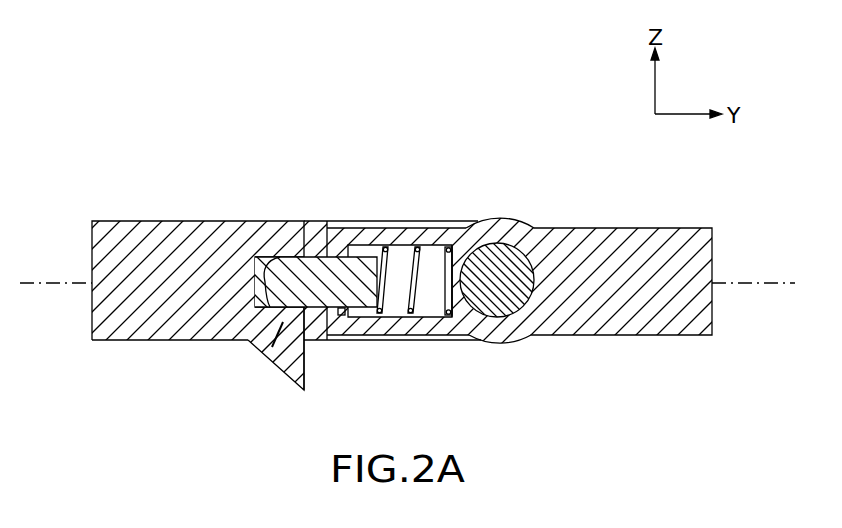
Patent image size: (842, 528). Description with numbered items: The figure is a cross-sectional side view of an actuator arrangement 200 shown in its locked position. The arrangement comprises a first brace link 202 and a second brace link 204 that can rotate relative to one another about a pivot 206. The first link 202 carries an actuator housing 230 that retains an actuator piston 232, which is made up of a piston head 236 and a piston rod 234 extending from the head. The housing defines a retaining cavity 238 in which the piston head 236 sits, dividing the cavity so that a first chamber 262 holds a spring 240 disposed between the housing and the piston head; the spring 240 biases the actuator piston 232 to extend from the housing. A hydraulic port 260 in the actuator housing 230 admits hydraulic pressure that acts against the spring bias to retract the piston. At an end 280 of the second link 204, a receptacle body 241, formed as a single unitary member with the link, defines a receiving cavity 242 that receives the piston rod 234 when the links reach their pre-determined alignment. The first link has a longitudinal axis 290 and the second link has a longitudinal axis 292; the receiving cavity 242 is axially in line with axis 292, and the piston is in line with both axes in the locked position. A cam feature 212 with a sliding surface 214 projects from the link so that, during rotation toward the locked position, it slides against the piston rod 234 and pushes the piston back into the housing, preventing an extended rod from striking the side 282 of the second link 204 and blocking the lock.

The actuator arrangement 200 is at (497, 130).
The first brace link 202 is at (662, 243).
The second brace link 204 is at (100, 221).
The pivot 206 is at (493, 256).
The cam feature 212 is at (296, 366).
The sliding surface 214 is at (303, 371).
The actuator housing 230 is at (357, 222).
The actuator piston 232 is at (314, 252).
The piston rod 234 is at (294, 257).
The piston head 236 is at (367, 253).
The retaining cavity 238 is at (430, 263).
The spring 240 is at (410, 300).
The receptacle body 241 is at (283, 322).
The receiving cavity 242 is at (254, 257).
The hydraulic port 260 is at (343, 316).
The first chamber 262 is at (432, 305).
The end of second link 280 is at (314, 337).
The side of second link 282 is at (198, 340).
The longitudinal axis of first link 290 is at (750, 283).
The longitudinal axis of second link 292 is at (55, 283).